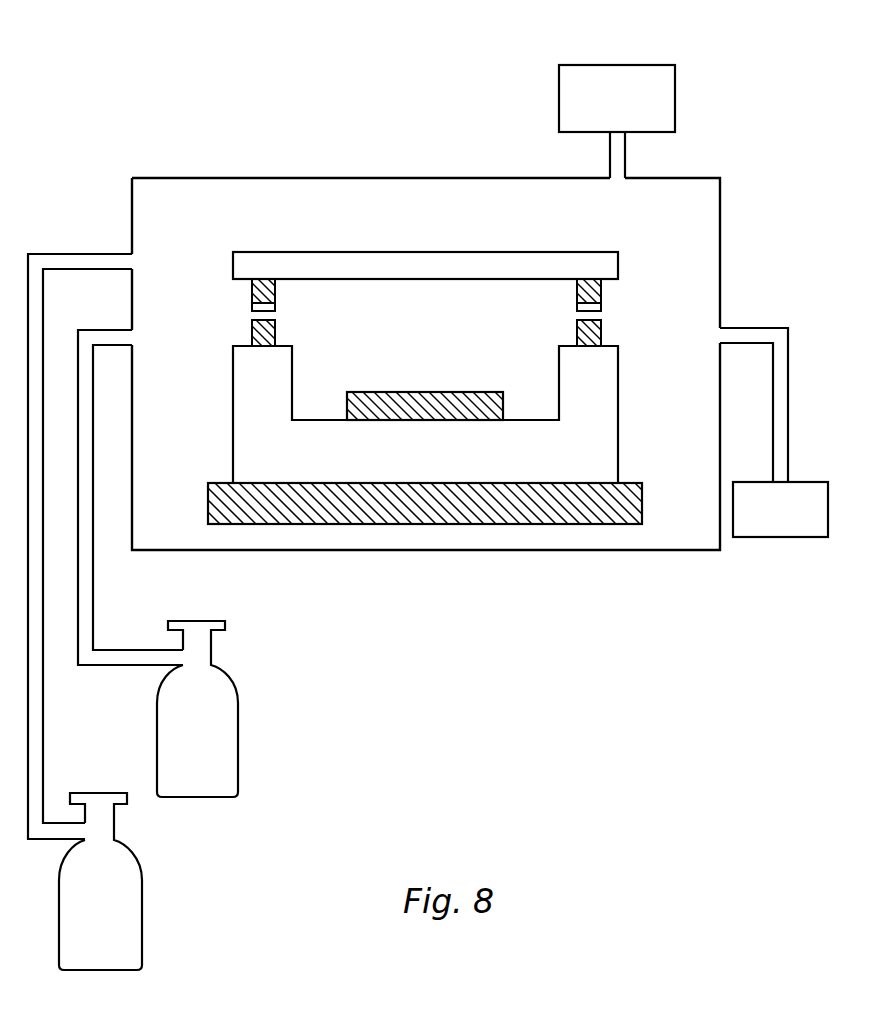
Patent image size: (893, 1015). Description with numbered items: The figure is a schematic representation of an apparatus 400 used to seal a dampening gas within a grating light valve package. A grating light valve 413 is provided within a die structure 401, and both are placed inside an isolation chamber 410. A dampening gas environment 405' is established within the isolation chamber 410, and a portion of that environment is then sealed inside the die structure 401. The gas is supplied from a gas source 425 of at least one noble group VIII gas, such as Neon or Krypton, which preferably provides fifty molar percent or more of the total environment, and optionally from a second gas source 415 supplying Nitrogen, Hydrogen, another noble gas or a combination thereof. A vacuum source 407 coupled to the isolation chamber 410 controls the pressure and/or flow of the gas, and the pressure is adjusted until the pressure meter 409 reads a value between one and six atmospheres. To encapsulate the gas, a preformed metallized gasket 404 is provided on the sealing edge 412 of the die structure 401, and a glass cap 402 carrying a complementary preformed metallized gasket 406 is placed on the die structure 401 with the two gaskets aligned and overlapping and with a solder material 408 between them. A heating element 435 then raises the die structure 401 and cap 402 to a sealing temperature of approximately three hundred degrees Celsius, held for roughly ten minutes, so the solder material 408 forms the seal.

The apparatus 400 is at (156, 121).
The dampening gas environment 405' is at (371, 153).
The isolation chamber 410 is at (385, 176).
The pressure meter 409 is at (675, 100).
The glass cap 402 is at (618, 262).
The preformed metallized gasket 406 is at (252, 298).
The solder material 408 is at (252, 311).
The preformed metallized gasket 404 is at (252, 320).
The sealing edge 412 is at (287, 343).
The die structure 401 is at (603, 462).
The grating light valve 413 is at (403, 393).
The heating element 435 is at (507, 524).
The vacuum source 407 is at (752, 537).
The noble group VIII gas source 425 is at (215, 745).
The second gas source 415 is at (130, 922).